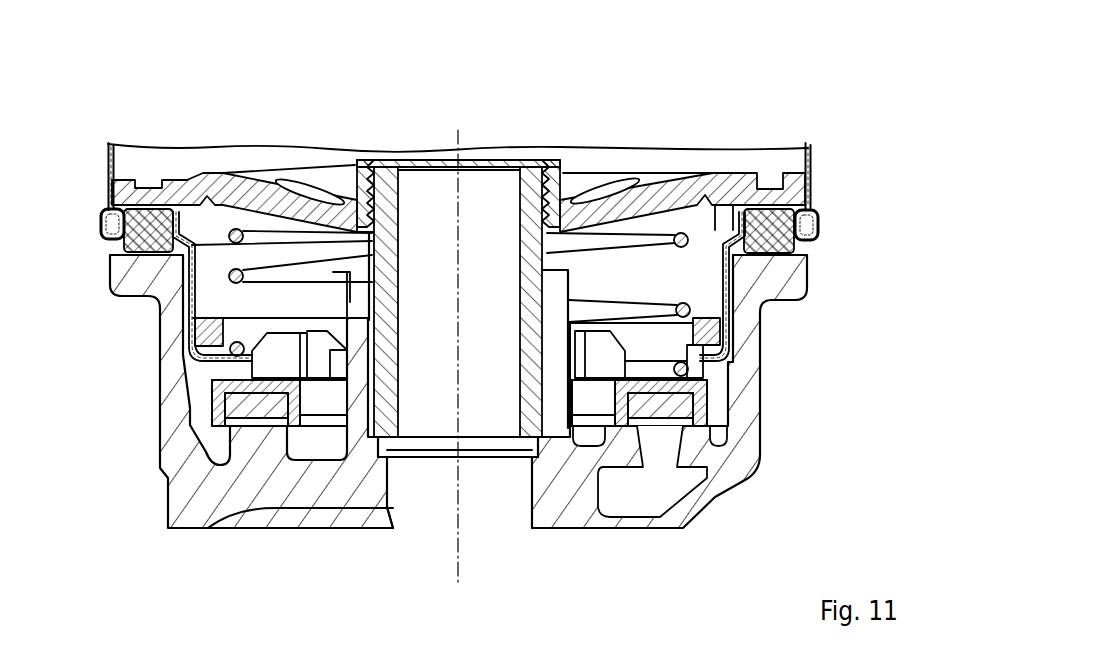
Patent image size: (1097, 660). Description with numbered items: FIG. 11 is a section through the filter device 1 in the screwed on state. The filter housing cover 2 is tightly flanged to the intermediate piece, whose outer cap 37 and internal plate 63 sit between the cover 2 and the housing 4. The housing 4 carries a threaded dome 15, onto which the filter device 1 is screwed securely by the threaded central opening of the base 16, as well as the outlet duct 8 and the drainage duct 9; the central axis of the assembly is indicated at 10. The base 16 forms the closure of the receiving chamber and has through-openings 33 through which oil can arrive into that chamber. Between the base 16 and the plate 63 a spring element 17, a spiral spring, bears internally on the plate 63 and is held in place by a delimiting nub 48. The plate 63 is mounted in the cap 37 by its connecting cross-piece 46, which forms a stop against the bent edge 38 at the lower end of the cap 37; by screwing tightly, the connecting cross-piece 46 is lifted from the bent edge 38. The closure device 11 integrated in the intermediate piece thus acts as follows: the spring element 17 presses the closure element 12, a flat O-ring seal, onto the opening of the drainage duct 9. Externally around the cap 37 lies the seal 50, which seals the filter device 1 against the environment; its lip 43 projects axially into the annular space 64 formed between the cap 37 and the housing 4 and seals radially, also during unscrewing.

The filter device 1 is at (761, 85).
The filter housing cover 2 is at (168, 147).
The housing 4 is at (768, 466).
The outlet duct 8 is at (427, 507).
The drainage duct 9 is at (660, 457).
The central axis 10 is at (462, 548).
The closure device 11 is at (315, 446).
The closure element 12 is at (160, 468).
The dome 15 is at (571, 288).
The base 16 is at (238, 170).
The spring element 17 is at (643, 240).
The through-openings 33 is at (320, 192).
The cap 37 is at (828, 207).
The bent edge 38 is at (190, 365).
The lip 43 is at (188, 323).
The connecting cross-piece 46 is at (718, 331).
The delimiting nub 48 is at (277, 360).
The seal 50 is at (808, 251).
The plate 63 is at (722, 393).
The annular space 64 is at (186, 352).